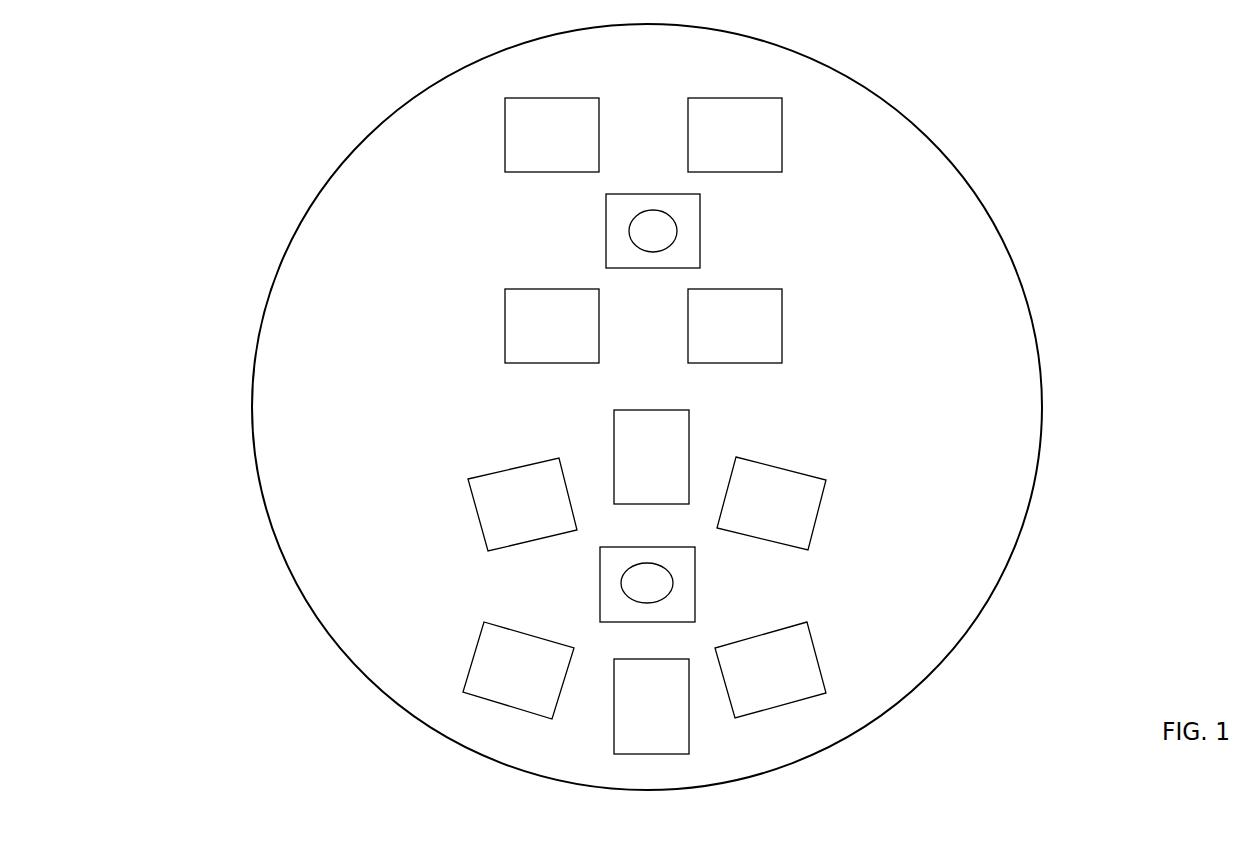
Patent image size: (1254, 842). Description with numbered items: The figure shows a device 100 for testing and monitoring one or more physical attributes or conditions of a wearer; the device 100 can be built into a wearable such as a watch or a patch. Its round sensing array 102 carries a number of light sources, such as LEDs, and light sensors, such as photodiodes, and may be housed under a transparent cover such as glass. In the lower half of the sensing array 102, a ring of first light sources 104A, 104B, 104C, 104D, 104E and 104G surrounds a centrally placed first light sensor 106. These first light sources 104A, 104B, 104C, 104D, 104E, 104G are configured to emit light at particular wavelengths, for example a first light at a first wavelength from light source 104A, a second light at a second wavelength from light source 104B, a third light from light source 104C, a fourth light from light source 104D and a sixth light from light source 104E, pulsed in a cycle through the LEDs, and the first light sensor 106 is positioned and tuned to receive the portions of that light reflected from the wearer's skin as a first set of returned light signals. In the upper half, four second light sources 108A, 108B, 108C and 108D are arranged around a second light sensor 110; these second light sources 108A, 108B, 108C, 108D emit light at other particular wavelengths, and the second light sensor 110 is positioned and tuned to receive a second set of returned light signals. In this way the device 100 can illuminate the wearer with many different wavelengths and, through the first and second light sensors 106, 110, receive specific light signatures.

The device 100 is at (90, 175).
The sensing array 102 is at (1022, 283).
The first light source 104A is at (691, 455).
The first light source 104B is at (824, 508).
The first light source 104C is at (822, 660).
The first light source 104D is at (690, 715).
The first light source 104E is at (466, 662).
The first light source 104G is at (473, 523).
The first light sensor 106 is at (599, 598).
The second light source 108A is at (503, 143).
The second light source 108B is at (784, 125).
The second light source 108C is at (784, 315).
The second light source 108D is at (503, 345).
The second light sensor 110 is at (604, 245).